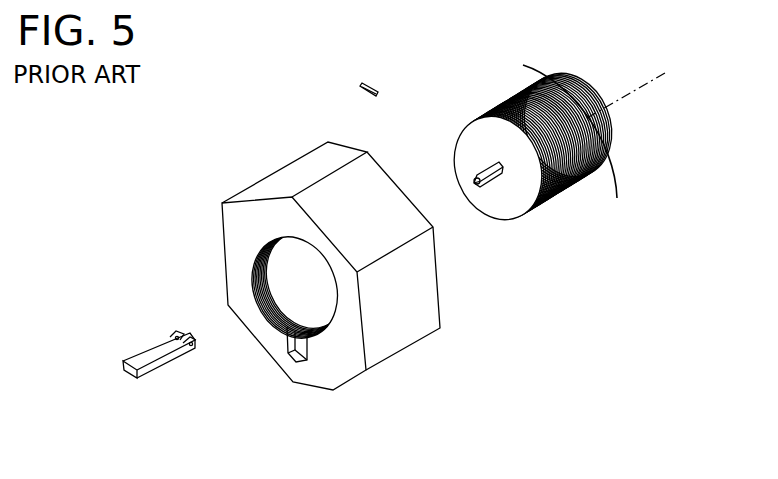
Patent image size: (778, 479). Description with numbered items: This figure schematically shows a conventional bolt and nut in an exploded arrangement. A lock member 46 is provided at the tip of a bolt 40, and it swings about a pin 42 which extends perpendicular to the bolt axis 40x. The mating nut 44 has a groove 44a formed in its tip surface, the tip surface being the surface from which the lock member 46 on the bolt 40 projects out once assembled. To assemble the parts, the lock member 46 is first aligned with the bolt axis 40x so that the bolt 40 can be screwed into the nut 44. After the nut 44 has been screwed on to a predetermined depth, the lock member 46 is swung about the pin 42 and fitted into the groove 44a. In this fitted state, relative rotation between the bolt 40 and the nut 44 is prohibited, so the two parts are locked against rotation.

The bolt 40 is at (487, 112).
The bolt axis 40x is at (654, 84).
The pin 42 is at (373, 84).
The nut 44 is at (282, 167).
The groove 44a is at (293, 364).
The lock member 46 is at (157, 345).